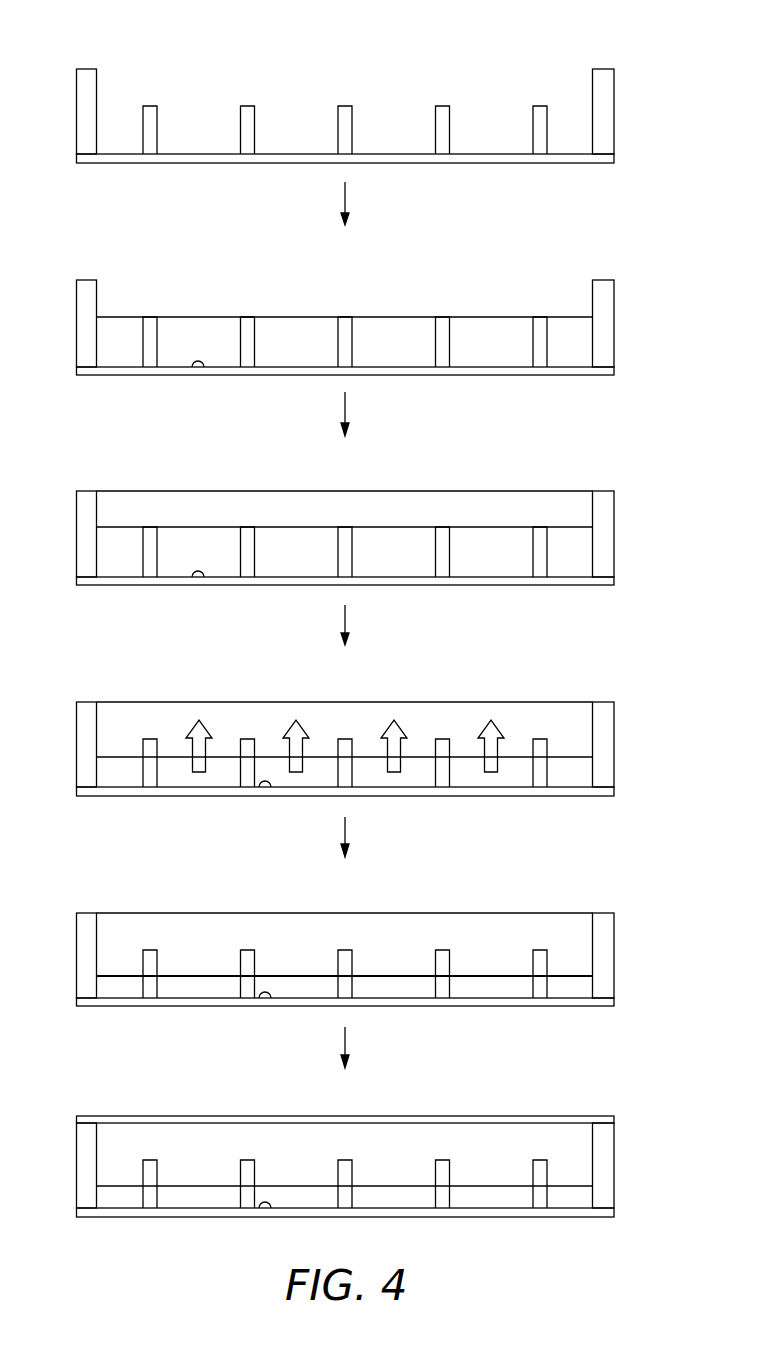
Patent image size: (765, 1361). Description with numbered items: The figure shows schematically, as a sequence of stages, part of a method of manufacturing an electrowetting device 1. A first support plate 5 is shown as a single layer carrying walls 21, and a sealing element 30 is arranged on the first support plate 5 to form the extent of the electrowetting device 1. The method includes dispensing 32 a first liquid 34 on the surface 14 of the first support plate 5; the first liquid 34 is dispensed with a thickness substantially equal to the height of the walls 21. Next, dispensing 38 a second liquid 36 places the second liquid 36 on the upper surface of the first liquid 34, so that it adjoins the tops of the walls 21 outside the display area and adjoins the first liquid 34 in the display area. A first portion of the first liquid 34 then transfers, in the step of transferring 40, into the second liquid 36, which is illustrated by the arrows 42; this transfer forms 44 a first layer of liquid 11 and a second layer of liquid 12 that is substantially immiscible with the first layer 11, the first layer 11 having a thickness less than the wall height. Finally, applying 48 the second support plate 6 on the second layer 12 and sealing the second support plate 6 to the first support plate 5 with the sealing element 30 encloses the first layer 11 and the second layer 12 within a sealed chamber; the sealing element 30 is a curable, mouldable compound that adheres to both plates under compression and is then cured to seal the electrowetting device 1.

The electrowetting device 1 is at (90, 49).
The first support plate 5 is at (541, 164).
The second support plate 6 is at (491, 1118).
The first layer of liquid 11 is at (569, 1234).
The second layer of liquid 12 is at (583, 918).
The surface of the first support plate 14 is at (197, 153).
The walls 21 is at (537, 107).
The sealing element 30 is at (82, 96).
The dispensing a first liquid 32 is at (347, 196).
The first liquid 34 is at (569, 325).
The second liquid 36 is at (583, 498).
The dispensing a second liquid 38 is at (347, 406).
The transferring 40 is at (347, 618).
The arrows 42 is at (491, 716).
The forming a first layer and a second layer 44 is at (347, 836).
The applying the second support plate 48 is at (347, 1046).